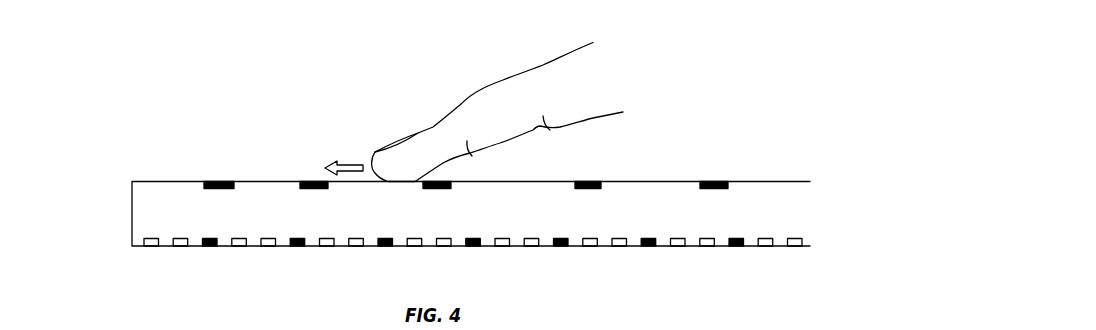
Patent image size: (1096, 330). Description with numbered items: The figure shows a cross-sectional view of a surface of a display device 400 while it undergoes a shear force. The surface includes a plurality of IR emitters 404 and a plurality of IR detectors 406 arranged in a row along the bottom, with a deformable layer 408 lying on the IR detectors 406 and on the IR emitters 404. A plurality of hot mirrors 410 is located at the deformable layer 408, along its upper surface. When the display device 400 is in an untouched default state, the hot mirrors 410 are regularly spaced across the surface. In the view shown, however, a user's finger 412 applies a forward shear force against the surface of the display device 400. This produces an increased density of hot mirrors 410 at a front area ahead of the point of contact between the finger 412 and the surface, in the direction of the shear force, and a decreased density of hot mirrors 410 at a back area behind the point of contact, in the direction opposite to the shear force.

The display device 400 is at (439, 176).
The IR emitters 404 is at (385, 246).
The IR detectors 406 is at (705, 246).
The deformable layer 408 is at (123, 215).
The hot mirrors 410 is at (222, 182).
The user's finger 412 is at (470, 102).